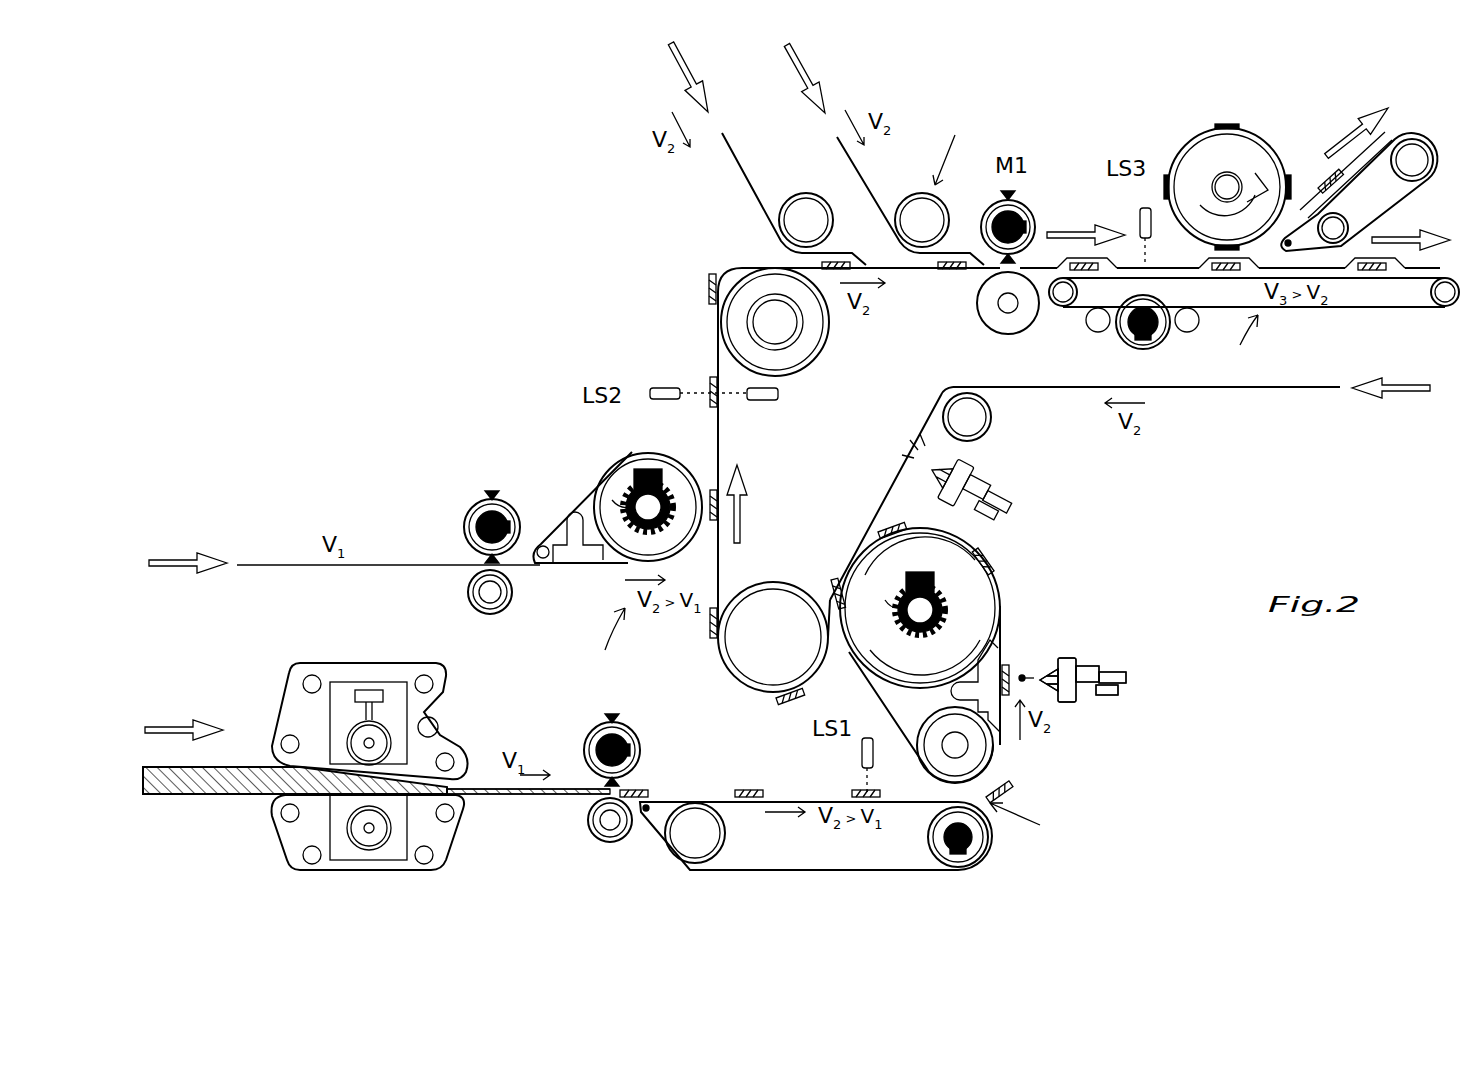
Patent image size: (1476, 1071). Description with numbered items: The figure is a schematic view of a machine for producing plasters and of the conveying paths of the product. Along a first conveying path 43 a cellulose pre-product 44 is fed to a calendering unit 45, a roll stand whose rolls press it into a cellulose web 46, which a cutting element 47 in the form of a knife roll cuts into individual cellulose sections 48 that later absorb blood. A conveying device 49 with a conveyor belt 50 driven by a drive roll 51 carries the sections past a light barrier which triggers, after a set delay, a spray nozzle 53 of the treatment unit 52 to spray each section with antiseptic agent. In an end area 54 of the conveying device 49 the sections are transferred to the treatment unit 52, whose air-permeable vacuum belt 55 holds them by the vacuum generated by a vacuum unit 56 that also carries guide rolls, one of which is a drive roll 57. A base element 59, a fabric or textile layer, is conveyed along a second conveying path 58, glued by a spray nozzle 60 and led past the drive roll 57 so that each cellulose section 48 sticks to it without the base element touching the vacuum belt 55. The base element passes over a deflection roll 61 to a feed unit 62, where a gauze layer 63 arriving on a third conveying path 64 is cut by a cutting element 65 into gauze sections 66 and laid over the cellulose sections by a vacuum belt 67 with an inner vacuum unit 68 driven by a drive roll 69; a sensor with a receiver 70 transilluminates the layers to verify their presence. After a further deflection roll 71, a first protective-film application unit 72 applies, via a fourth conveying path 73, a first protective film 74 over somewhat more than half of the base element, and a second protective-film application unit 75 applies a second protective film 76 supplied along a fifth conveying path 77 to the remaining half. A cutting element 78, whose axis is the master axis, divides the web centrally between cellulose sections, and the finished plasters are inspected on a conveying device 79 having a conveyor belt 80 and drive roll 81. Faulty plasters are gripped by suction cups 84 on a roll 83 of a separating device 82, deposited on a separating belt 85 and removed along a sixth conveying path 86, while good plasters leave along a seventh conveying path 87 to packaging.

The first conveying path 43 is at (168, 722).
The cellulose pre-product 44 is at (190, 800).
The calendering unit 45 is at (469, 871).
The cellulose web 46 is at (537, 800).
The cutting element 47 is at (572, 744).
The cellulose sections 48 is at (640, 790).
The conveying device 49 is at (878, 890).
The conveyor belt 50 is at (770, 869).
The drive roll 51 is at (968, 860).
The treatment unit 52 is at (1061, 641).
The spray nozzle 53 is at (1067, 702).
The end area 54 is at (1033, 827).
The vacuum belt 55 is at (998, 763).
The vacuum unit 56 is at (992, 668).
The drive roll 57 is at (975, 590).
The second conveying path 58 is at (1390, 392).
The base element 59 is at (1243, 390).
The spray nozzle 60 is at (978, 480).
The deflection roll 61 is at (801, 590).
The feed unit 62 is at (603, 643).
The gauze layer 63 is at (365, 568).
The third conveying path 64 is at (160, 560).
The cutting element 65 is at (456, 497).
The gauze sections 66 is at (712, 490).
The vacuum belt 67 is at (570, 510).
The vacuum unit 68 is at (585, 557).
The drive roll 69 is at (648, 455).
The receiver 70 is at (778, 400).
The deflection roll 71 is at (817, 360).
The first protective-film application unit 72 is at (828, 181).
The fourth conveying path 73 is at (688, 55).
The first protective film 74 is at (866, 178).
The second protective-film application unit 75 is at (951, 146).
The second protective film 76 is at (735, 170).
The fifth conveying path 77 is at (803, 60).
The cutting element 78 is at (1022, 205).
The conveying device 79 is at (1232, 341).
The conveyor belt 80 is at (1288, 310).
The drive roll 81 is at (1130, 345).
The separating device 82 is at (1285, 104).
The roll 83 is at (1195, 152).
The suction cups 84 is at (1225, 122).
The separating belt 85 is at (1432, 148).
The sixth conveying path 86 is at (1335, 117).
The seventh conveying path 87 is at (1408, 240).